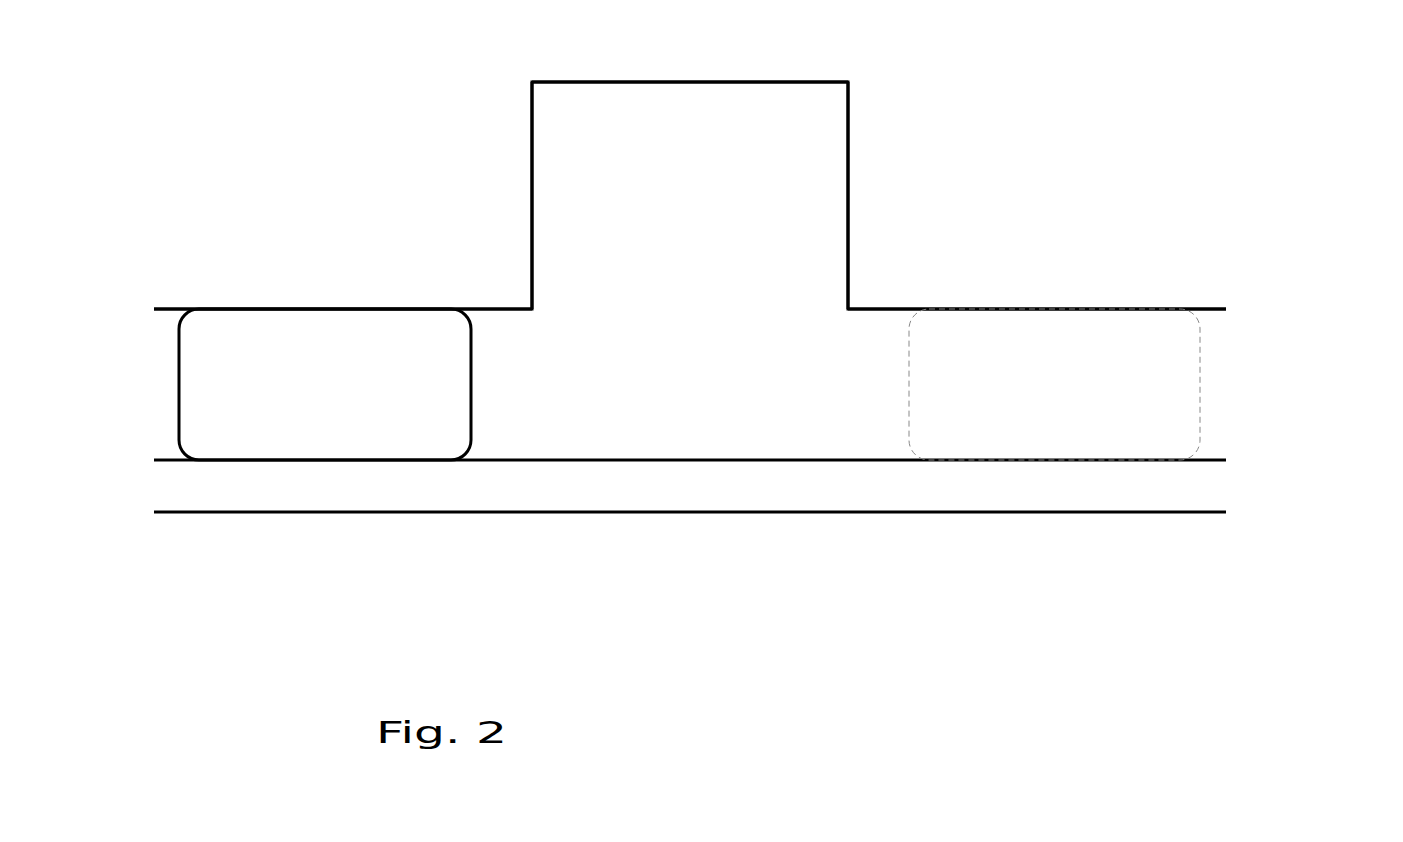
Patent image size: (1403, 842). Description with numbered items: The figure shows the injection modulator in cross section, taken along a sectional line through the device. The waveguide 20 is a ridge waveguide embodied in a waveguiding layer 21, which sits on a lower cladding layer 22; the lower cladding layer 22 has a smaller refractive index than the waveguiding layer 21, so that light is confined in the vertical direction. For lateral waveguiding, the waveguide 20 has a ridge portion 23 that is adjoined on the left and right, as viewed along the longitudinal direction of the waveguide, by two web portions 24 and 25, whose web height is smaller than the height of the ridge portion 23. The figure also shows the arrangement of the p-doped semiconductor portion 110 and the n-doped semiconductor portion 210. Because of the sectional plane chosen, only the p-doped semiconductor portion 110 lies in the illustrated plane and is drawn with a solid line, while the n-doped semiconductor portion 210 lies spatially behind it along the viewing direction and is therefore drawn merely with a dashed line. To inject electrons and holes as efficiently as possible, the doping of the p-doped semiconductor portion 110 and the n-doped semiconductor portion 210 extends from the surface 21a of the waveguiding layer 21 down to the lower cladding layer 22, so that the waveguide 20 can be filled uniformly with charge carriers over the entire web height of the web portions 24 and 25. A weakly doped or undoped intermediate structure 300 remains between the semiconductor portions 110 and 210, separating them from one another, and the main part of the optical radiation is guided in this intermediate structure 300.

The waveguide 20 is at (690, 181).
The waveguiding layer 21 is at (726, 339).
The surface of the waveguiding layer 21a is at (182, 309).
The lower cladding layer 22 is at (1213, 485).
The ridge portion 23 is at (722, 132).
The web portion 24 is at (508, 347).
The web portion 25 is at (884, 333).
The p-doped semiconductor portion 110 is at (344, 359).
The n-doped semiconductor portion 210 is at (1060, 347).
The intermediate structure 300 is at (697, 372).